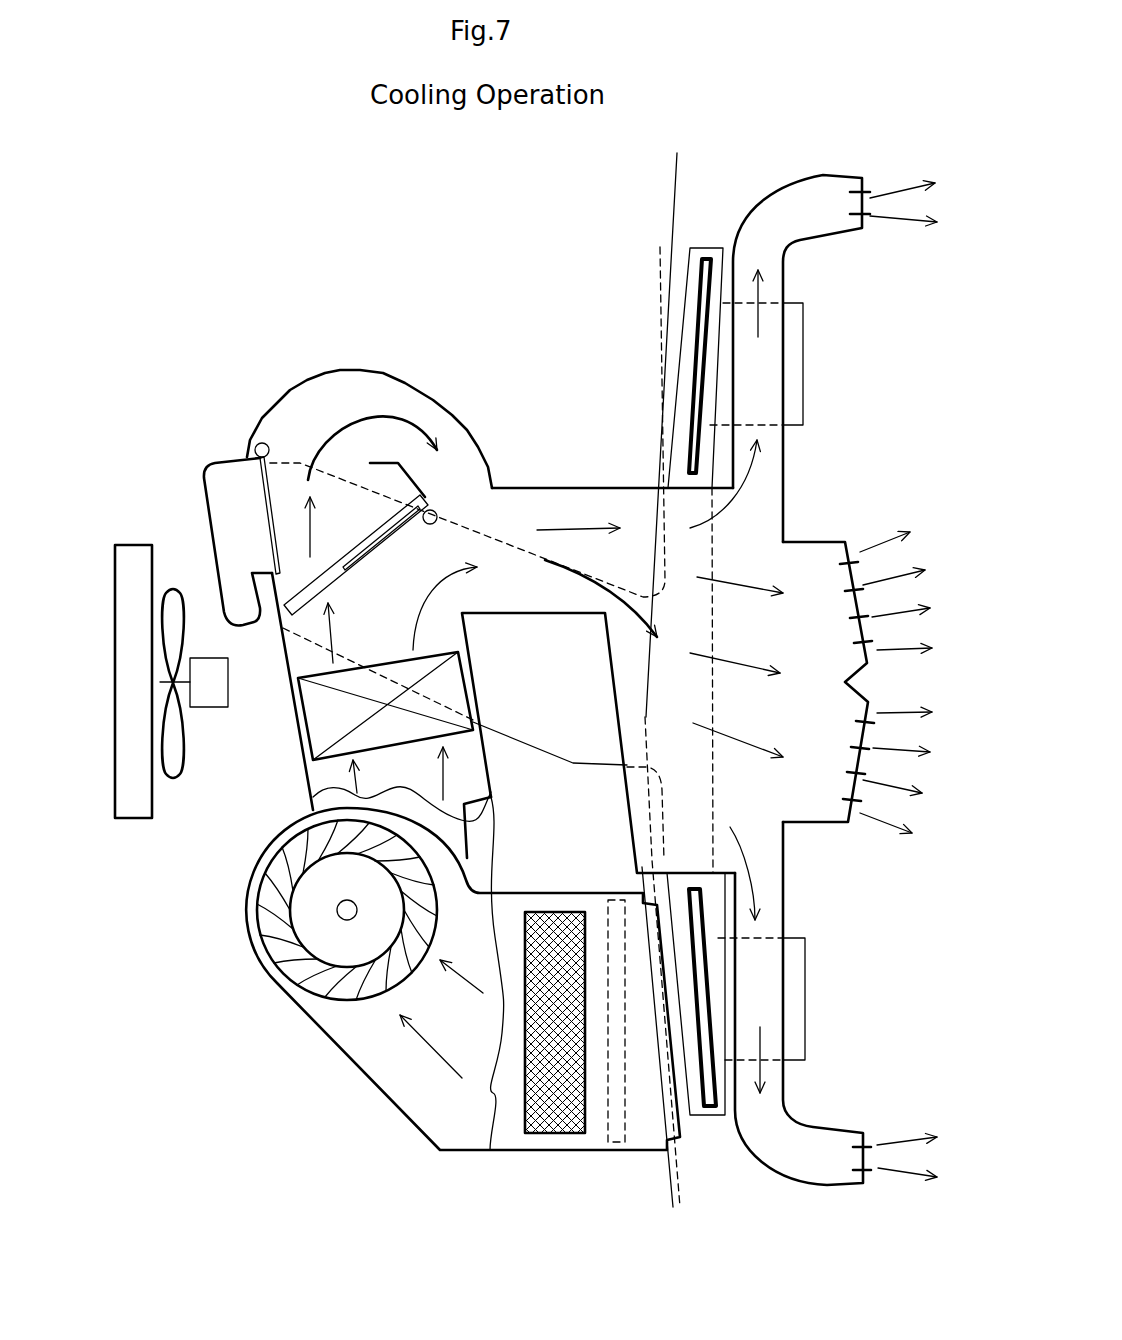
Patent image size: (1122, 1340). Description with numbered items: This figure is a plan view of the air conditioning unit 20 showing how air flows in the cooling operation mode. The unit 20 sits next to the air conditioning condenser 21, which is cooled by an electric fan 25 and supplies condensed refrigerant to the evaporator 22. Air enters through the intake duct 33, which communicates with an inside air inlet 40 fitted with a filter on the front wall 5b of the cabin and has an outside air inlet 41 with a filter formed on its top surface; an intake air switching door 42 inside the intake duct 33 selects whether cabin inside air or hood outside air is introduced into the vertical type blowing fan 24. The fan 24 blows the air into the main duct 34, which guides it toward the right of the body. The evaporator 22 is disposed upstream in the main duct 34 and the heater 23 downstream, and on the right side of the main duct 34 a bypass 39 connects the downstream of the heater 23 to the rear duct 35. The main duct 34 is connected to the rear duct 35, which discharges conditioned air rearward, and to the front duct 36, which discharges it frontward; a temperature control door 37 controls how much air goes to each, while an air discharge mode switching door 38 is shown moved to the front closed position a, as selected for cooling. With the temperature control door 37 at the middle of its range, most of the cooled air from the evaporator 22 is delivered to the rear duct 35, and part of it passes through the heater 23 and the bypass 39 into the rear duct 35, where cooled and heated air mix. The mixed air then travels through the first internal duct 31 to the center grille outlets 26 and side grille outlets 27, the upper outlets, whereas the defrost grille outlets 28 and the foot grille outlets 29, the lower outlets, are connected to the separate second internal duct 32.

The air conditioning unit 20 is at (282, 795).
The air conditioning condenser 21 is at (115, 700).
The evaporator 22 is at (443, 653).
The heater 23 is at (363, 540).
The vertical type blowing fan 24 is at (317, 988).
The electric fan 25 is at (177, 742).
The center grille outlets 26 is at (855, 568).
The side grille outlets 27 is at (870, 200).
The defrost grille outlets 28 is at (695, 332).
The foot grille outlets 29 is at (805, 358).
The first internal duct 31 is at (733, 232).
The second internal duct 32 is at (673, 395).
The intake duct 33 is at (387, 1097).
The main duct 34 is at (492, 782).
The rear duct 35 is at (557, 487).
The front duct 36 is at (200, 503).
The temperature control door 37 is at (370, 567).
The air discharge mode switching door 38 is at (267, 540).
The bypass 39 is at (447, 420).
The inside air inlet 40 is at (684, 1124).
The outside air inlet 41 is at (548, 1133).
The intake air switching door 42 is at (622, 1122).
The front wall of the cabin 5b is at (660, 247).
The front closed position a is at (280, 607).